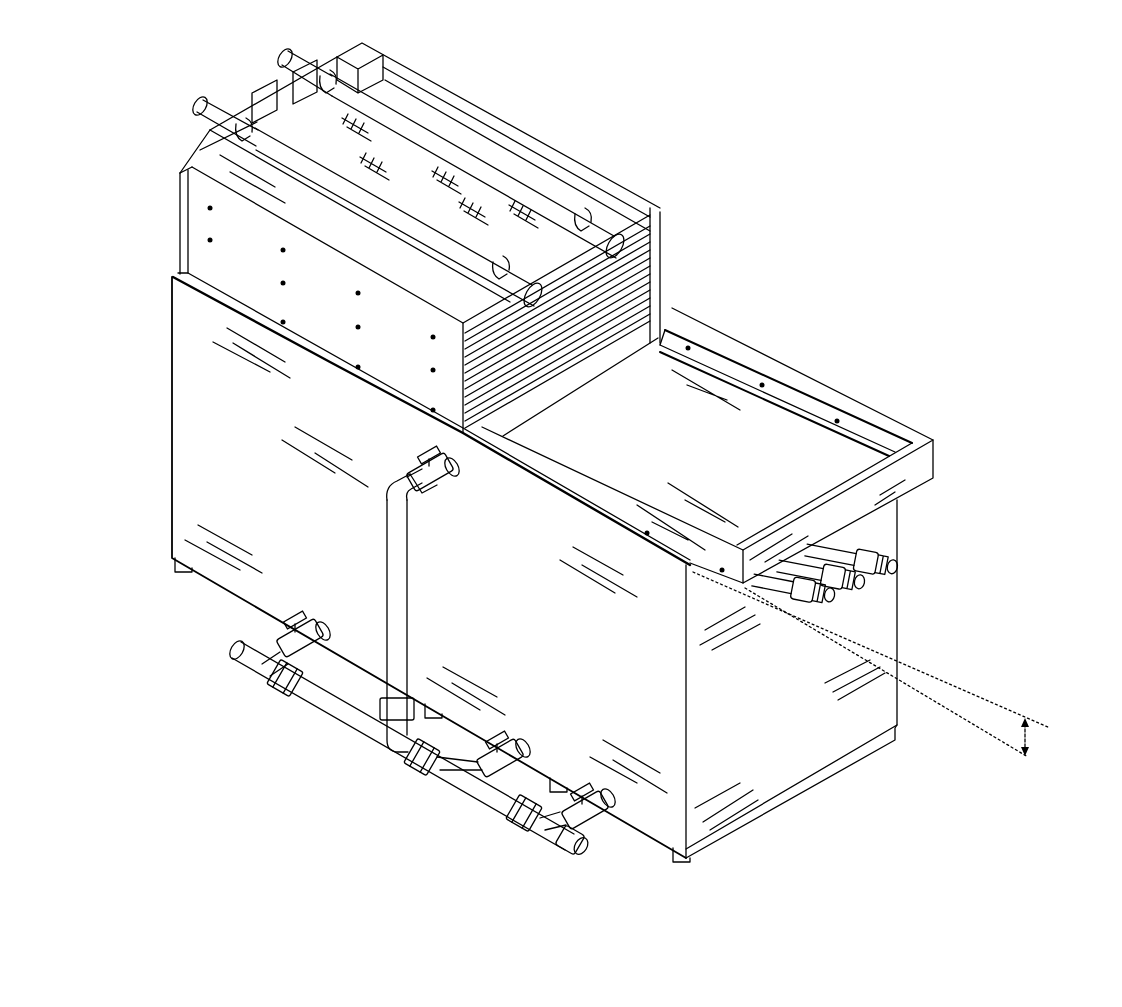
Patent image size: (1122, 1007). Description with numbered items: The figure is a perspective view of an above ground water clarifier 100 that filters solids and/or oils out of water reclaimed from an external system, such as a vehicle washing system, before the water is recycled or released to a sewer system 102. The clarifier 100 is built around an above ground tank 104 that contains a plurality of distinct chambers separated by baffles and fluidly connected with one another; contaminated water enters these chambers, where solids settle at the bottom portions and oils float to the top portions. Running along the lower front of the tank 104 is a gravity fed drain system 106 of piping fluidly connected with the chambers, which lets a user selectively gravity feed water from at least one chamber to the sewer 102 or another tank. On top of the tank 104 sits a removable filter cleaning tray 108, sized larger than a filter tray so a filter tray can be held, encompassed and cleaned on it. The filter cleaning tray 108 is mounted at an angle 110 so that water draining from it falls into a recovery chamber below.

The above ground water clarifier 100 is at (874, 140).
The sewer system 102 is at (596, 866).
The above ground tank 104 is at (173, 377).
The gravity fed drain system 106 is at (353, 713).
The removable filter cleaning tray 108 is at (843, 388).
The angle 110 is at (1028, 742).